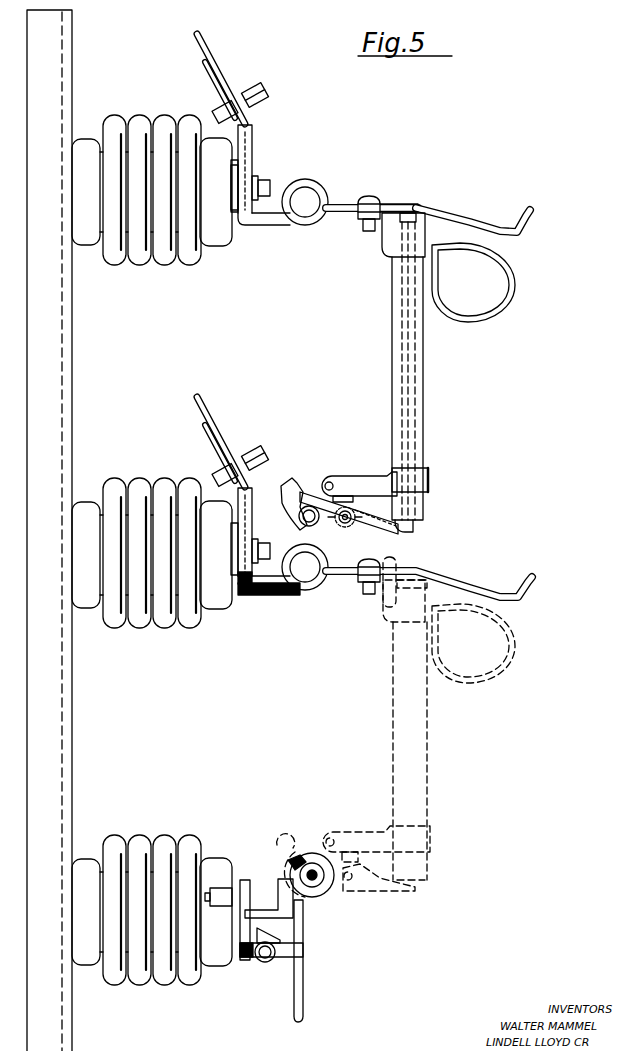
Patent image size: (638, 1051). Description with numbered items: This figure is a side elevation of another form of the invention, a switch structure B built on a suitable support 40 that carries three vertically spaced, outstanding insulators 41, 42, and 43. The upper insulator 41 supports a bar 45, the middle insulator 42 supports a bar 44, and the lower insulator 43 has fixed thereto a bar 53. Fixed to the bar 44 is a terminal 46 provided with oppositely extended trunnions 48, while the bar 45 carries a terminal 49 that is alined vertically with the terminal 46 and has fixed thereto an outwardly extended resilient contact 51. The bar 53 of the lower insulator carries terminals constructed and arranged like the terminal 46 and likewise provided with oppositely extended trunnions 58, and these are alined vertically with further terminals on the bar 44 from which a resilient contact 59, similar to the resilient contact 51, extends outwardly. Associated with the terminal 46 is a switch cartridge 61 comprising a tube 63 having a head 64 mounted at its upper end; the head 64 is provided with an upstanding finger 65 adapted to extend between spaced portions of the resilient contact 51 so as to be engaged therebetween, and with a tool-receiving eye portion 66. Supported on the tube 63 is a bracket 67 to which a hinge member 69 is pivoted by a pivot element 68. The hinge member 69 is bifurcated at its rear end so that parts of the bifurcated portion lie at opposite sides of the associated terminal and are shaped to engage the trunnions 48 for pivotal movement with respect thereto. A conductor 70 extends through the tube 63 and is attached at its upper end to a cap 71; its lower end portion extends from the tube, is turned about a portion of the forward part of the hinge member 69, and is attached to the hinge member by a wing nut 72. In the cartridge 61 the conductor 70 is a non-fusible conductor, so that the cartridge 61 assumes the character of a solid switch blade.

The support 40 is at (73, 386).
The insulator 41 is at (180, 268).
The insulator 42 is at (178, 630).
The insulator 43 is at (183, 988).
The bar 44 is at (243, 597).
The bar 45 is at (238, 222).
The terminal 46 is at (258, 505).
The trunnions 48 is at (300, 506).
The terminal 49 is at (262, 166).
The resilient contact 51 is at (340, 205).
The bar 53 is at (243, 962).
The trunnions 58 is at (318, 880).
The resilient contact 59 is at (490, 588).
The switch cartridge 61 is at (432, 398).
The tube 63 is at (425, 352).
The head 64 is at (390, 248).
The upstanding finger 65 is at (380, 200).
The tool-receiving eye portion 66 is at (514, 276).
The bracket 67 is at (360, 480).
The pivot element 68 is at (331, 482).
The hinge member 69 is at (370, 535).
The conductor 70 is at (412, 437).
The cap 71 is at (410, 206).
The wing nut 72 is at (352, 528).
The switch structure B is at (456, 203).